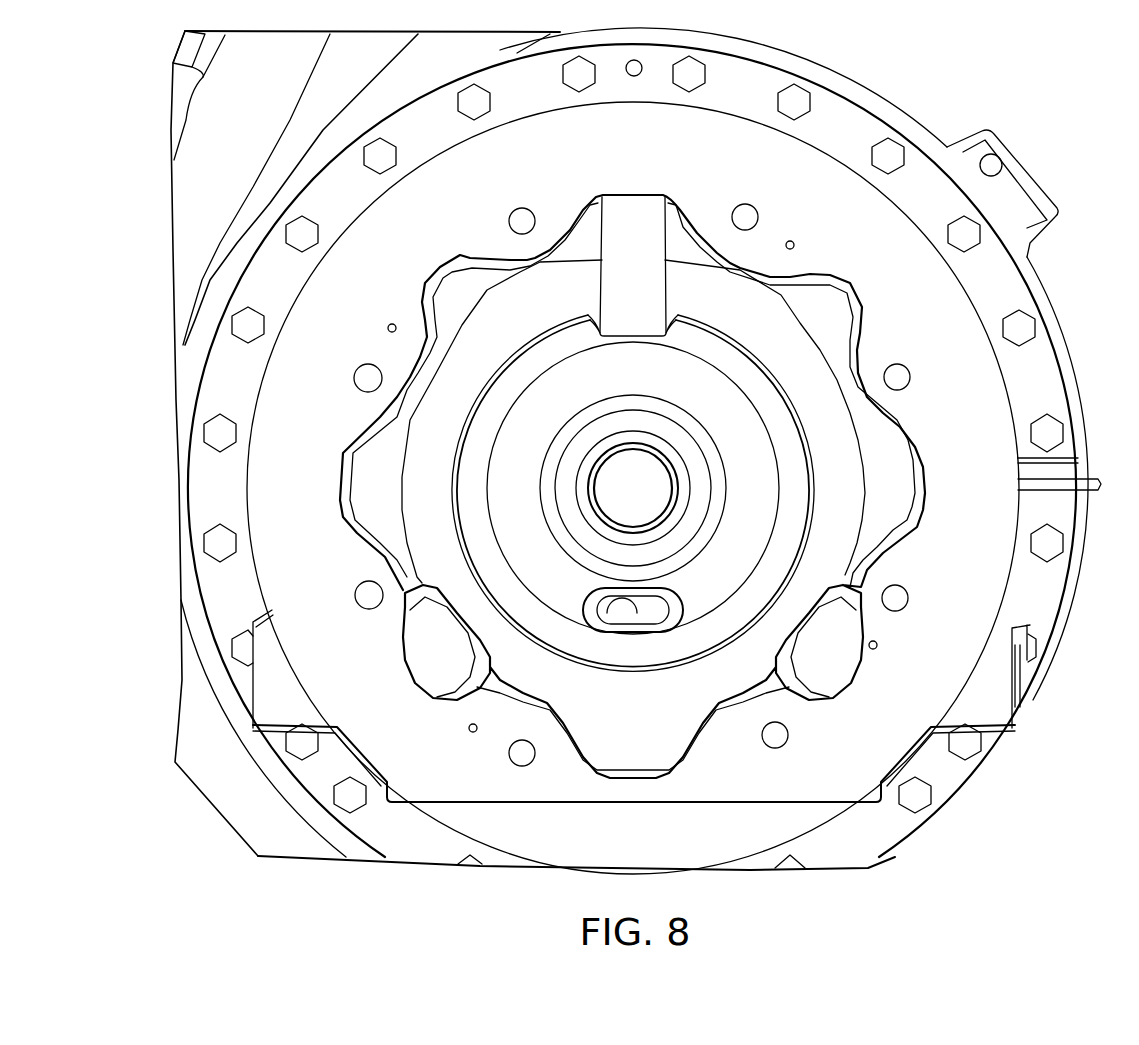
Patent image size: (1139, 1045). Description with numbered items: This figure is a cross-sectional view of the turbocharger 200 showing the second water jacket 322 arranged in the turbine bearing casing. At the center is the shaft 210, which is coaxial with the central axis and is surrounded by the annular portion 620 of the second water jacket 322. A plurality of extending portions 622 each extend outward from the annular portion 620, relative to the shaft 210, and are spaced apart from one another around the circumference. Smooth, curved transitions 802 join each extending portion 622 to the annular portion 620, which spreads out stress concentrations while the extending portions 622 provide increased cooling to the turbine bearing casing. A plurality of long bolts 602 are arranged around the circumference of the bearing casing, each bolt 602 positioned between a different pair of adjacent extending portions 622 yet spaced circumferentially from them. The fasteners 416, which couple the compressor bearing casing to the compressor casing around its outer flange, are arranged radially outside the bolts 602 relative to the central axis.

The turbocharger 200 is at (1074, 118).
The shaft 210 is at (622, 490).
The second water jacket 322 is at (420, 475).
The fasteners 416 is at (1050, 433).
The bolts 602 is at (745, 217).
The annular portion 620 is at (838, 463).
The extending portions 622 is at (828, 305).
The smooth, curved transitions 802 is at (520, 250).